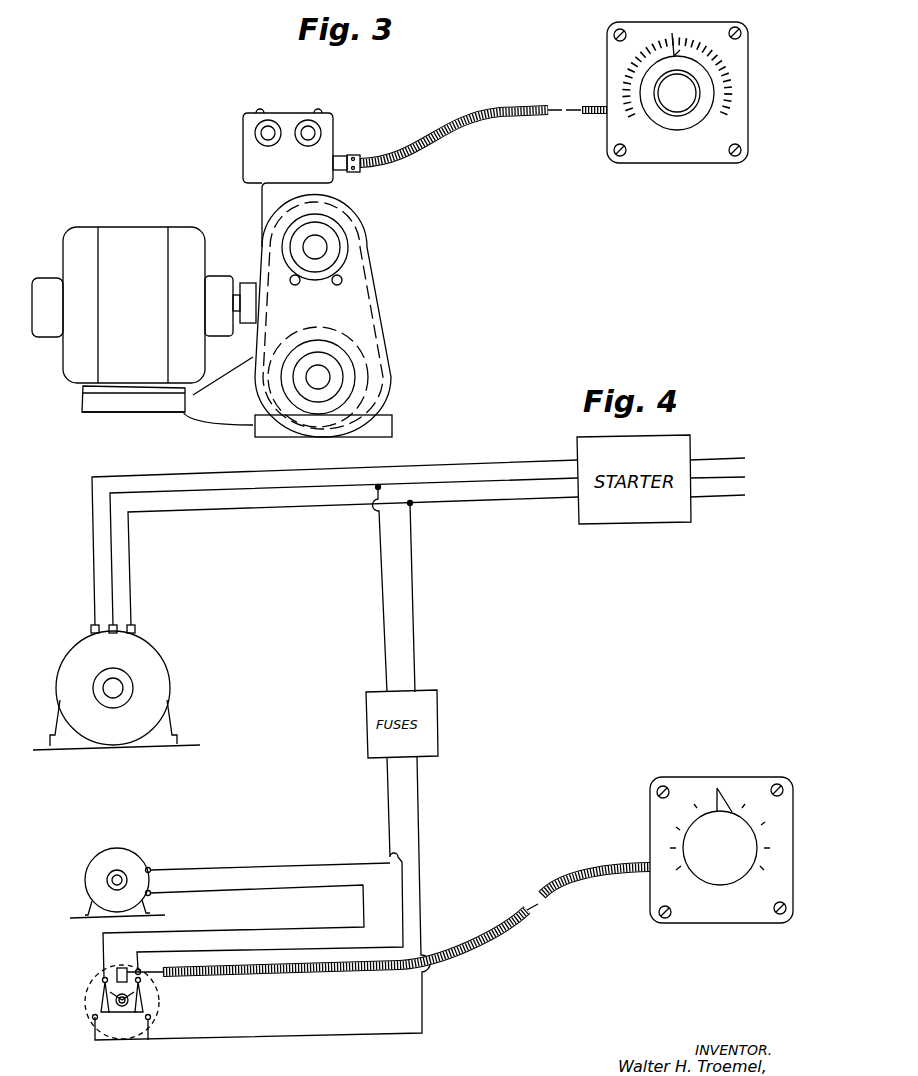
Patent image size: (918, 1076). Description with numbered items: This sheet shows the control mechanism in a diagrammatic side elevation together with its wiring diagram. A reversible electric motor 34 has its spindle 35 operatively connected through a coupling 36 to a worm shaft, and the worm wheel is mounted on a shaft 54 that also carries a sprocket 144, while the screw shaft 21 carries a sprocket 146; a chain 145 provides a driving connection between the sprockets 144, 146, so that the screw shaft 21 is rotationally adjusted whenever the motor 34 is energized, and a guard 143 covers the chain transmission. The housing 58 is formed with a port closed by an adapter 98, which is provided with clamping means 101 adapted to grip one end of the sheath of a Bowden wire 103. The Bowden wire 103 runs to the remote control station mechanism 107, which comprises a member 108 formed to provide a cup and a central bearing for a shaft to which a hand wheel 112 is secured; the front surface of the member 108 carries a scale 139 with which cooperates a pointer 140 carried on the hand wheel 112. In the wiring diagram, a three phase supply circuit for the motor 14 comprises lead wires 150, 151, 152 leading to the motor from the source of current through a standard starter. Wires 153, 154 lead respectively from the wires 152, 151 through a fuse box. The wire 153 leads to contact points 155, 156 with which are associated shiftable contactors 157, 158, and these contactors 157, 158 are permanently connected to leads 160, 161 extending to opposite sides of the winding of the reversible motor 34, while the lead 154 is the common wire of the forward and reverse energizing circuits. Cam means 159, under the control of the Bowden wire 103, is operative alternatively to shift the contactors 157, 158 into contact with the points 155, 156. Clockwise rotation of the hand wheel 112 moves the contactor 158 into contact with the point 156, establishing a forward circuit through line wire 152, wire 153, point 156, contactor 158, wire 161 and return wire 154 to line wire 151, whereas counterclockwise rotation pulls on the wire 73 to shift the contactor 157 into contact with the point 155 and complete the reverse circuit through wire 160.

In FIG. 4, the motor 14 is at (148, 659).
In FIG. 3, the screw shaft 21 is at (330, 378).
In FIG. 3, the reversible electric motor 34 is at (142, 326).
In FIG. 4, the reversible electric motor 34 is at (125, 862).
In FIG. 3, the spindle 35 is at (238, 283).
In FIG. 3, the coupling 36 is at (248, 320).
In FIG. 3, the shaft 54 is at (315, 257).
In FIG. 3, the housing 58 is at (262, 208).
In FIG. 4, the wire 73 is at (155, 971).
In FIG. 3, the adapter 98 is at (341, 157).
In FIG. 3, the clamping means 101 is at (359, 162).
In FIG. 3, the Bowden wire 103 is at (510, 112).
In FIG. 4, the Bowden wire 103 is at (506, 936).
In FIG. 3, the remote control station mechanism 107 is at (697, 106).
In FIG. 4, the remote control station mechanism 107 is at (721, 874).
In FIG. 3, the member 108 is at (677, 92).
In FIG. 3, the hand wheel 112 is at (677, 93).
In FIG. 4, the hand wheel 112 is at (720, 848).
In FIG. 3, the scale 139 is at (712, 52).
In FIG. 3, the pointer 140 is at (678, 48).
In FIG. 3, the guard 143 is at (323, 316).
In FIG. 3, the sprocket 144 is at (330, 250).
In FIG. 3, the chain 145 is at (368, 318).
In FIG. 3, the sprocket 146 is at (340, 391).
In FIG. 4, the lead wire 150 is at (742, 460).
In FIG. 4, the lead wire 151 is at (742, 477).
In FIG. 4, the lead wire 152 is at (742, 496).
In FIG. 4, the wire 153 is at (417, 628).
In FIG. 4, the wire 154 is at (382, 661).
In FIG. 4, the contact point 155 is at (151, 1017).
In FIG. 4, the contact point 156 is at (92, 1020).
In FIG. 4, the shiftable contactor 157 is at (146, 1000).
In FIG. 4, the shiftable contactor 158 is at (100, 1003).
In FIG. 4, the cam means 159 is at (123, 962).
In FIG. 4, the lead 160 is at (348, 952).
In FIG. 4, the lead 161 is at (123, 997).